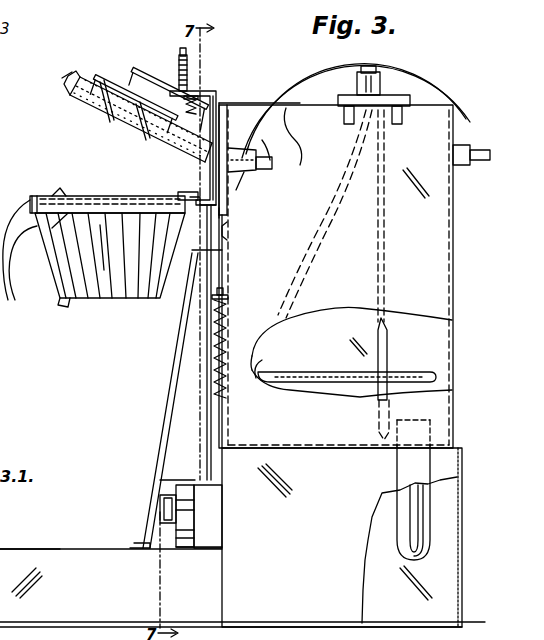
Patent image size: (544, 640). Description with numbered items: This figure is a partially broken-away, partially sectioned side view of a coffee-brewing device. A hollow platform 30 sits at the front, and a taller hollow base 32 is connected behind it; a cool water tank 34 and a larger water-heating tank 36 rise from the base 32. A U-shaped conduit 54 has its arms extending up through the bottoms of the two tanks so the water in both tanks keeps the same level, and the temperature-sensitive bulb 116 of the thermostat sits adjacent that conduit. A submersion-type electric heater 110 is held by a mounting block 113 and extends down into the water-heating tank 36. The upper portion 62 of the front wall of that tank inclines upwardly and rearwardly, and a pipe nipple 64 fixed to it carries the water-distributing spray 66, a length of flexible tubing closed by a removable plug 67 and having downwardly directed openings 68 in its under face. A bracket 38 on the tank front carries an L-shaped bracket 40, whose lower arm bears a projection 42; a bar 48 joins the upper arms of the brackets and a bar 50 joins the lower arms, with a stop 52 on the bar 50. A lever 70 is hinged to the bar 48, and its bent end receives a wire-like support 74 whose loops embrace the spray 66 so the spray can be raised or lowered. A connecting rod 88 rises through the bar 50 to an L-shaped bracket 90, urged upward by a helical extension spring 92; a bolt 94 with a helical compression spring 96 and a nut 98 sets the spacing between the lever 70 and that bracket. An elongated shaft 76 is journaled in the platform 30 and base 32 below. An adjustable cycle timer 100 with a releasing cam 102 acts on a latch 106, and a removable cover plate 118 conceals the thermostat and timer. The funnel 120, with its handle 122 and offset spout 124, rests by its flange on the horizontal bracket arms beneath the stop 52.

The platform 30 is at (50, 565).
The base 32 is at (448, 590).
The cool water tank 34 is at (275, 106).
The water-heating tank 36 is at (430, 301).
The bracket 38 is at (226, 230).
The L-shaped bracket 40 is at (62, 220).
The projection 42 is at (56, 196).
The bar 48 is at (238, 107).
The bar 50 is at (226, 206).
The stop 52 is at (192, 192).
The U-shaped conduit 54 is at (420, 525).
The upper portion of the front wall 62 is at (296, 108).
The pipe nipple 64 is at (272, 168).
The water-distributing spray 66 is at (98, 108).
The removable plug 67 is at (76, 82).
The openings 68 is at (142, 135).
The lever 70 is at (150, 90).
The wire-like support 74 is at (112, 85).
The elongated shaft 76 is at (2, 556).
The connecting rod 88 is at (214, 418).
The L-shaped bracket 90 is at (213, 92).
The helical extension spring 92 is at (215, 345).
The bolt 94 is at (183, 50).
The helical compression spring 96 is at (198, 106).
The nut 98 is at (180, 75).
The adjustable cycle timer 100 is at (212, 528).
The releasing cam 102 is at (184, 548).
The latch 106 is at (184, 486).
The submersion-type electric heater 110 is at (303, 372).
The mounting block 113 is at (392, 100).
The temperature-sensitive bulb 116 is at (388, 345).
The removable cover plate 118 is at (168, 382).
The funnel 120 is at (120, 294).
The handle 122 is at (8, 300).
The spout 124 is at (66, 306).